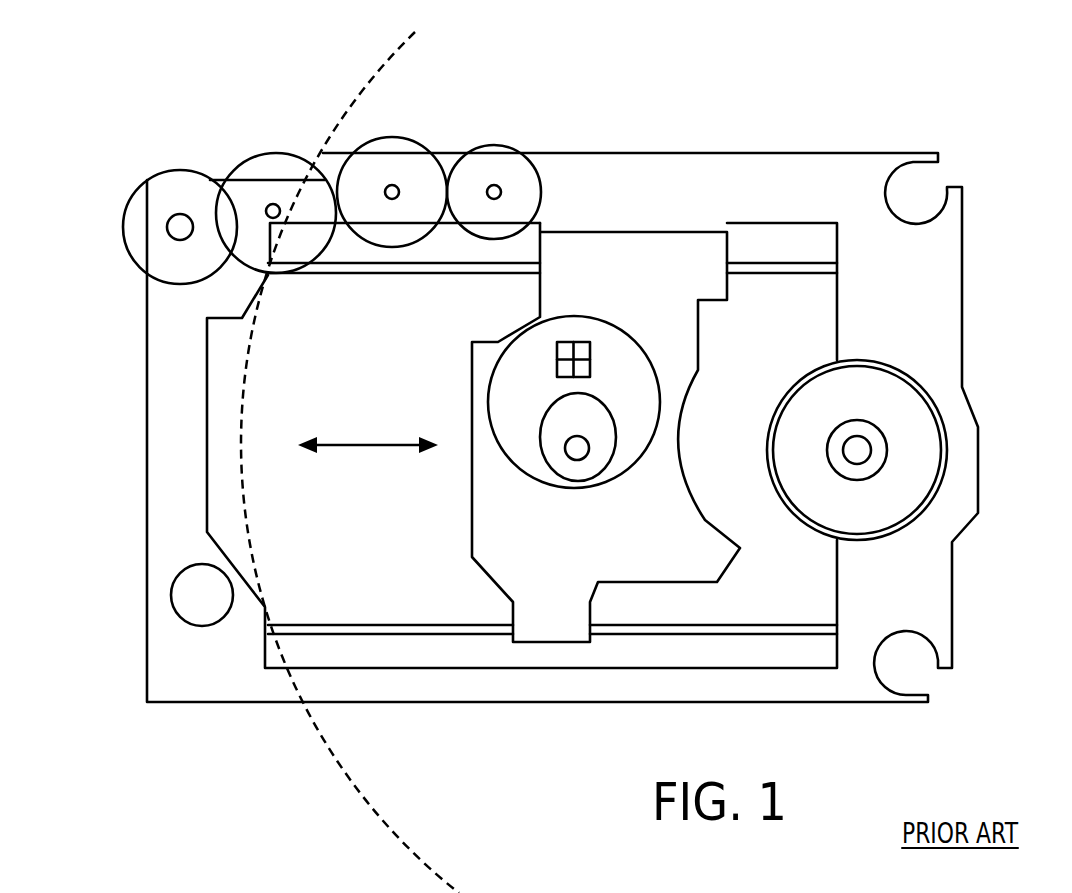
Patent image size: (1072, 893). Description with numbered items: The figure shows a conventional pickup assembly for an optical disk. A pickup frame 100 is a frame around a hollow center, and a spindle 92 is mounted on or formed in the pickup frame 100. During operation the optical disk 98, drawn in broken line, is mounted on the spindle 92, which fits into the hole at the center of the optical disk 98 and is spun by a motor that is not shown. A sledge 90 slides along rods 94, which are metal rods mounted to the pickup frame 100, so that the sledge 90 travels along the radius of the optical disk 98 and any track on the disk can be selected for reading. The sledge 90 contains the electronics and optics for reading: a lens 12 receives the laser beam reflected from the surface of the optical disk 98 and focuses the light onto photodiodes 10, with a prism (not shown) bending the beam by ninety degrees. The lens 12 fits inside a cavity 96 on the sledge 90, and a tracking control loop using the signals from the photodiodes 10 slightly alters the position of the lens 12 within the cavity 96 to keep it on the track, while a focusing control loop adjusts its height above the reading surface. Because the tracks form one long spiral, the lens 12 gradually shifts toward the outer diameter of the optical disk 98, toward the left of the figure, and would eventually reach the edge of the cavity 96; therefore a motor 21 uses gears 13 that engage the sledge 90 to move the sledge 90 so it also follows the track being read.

The pickup frame 100 is at (793, 203).
The sledge 90 is at (612, 545).
The photodiodes 10 is at (574, 340).
The lens 12 is at (576, 462).
The cavity 96 is at (541, 432).
The rods 94 is at (394, 276).
The spindle 92 is at (860, 402).
The motor 21 is at (139, 188).
The gears 13 is at (271, 153).
The optical disk 98 is at (256, 342).